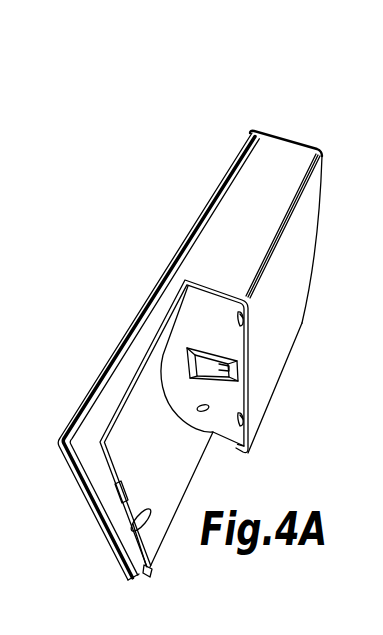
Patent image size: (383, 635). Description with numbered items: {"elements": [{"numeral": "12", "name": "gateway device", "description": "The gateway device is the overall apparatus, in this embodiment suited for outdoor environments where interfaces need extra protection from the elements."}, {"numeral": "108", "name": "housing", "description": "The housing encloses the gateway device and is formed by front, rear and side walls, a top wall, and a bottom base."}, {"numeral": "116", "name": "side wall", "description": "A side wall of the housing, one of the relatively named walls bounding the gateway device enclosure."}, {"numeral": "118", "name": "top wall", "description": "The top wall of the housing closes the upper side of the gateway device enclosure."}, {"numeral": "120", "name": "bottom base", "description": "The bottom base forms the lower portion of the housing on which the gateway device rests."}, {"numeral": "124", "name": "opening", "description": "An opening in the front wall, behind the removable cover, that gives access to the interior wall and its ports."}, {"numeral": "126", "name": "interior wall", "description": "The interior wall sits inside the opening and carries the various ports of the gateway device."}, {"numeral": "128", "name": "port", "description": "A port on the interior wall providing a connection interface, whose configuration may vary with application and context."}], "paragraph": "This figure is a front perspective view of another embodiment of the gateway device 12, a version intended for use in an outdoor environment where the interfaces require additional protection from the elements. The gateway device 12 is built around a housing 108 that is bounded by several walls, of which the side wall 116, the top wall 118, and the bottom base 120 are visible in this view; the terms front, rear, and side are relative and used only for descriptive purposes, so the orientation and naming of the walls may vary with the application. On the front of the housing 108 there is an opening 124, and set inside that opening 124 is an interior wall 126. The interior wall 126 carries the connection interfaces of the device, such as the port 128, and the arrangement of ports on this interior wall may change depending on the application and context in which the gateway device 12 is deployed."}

The device 12 is at (292, 114).
The housing 108 is at (318, 146).
The top wall 116 is at (285, 196).
The side wall 118 is at (263, 378).
The base wall with channel 120 is at (172, 257).
The mounting plate 124 is at (223, 428).
The apertures 126 is at (223, 335).
The connector port 128 is at (207, 357).